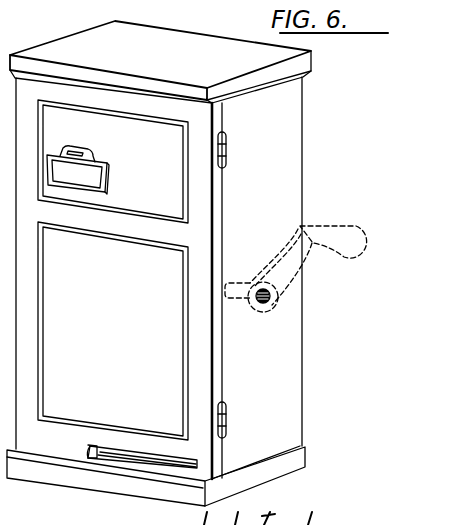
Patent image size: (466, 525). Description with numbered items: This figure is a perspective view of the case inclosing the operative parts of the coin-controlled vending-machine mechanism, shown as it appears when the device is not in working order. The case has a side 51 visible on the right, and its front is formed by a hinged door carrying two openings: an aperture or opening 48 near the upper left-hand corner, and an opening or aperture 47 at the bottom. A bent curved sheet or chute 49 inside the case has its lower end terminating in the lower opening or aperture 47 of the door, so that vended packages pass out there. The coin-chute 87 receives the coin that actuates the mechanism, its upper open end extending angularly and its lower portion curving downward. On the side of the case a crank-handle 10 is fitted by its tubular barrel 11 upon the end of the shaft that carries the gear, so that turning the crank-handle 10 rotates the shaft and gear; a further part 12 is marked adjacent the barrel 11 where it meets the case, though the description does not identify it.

The side 51 is at (288, 338).
The aperture or opening 48 is at (108, 188).
The coin-chute 87 is at (77, 152).
The crank-handle 10 is at (308, 265).
The tubular barrel 11 is at (250, 302).
The shaft 12 is at (226, 292).
The bent curved sheet or chute 49 is at (178, 460).
The opening or aperture 47 is at (88, 452).